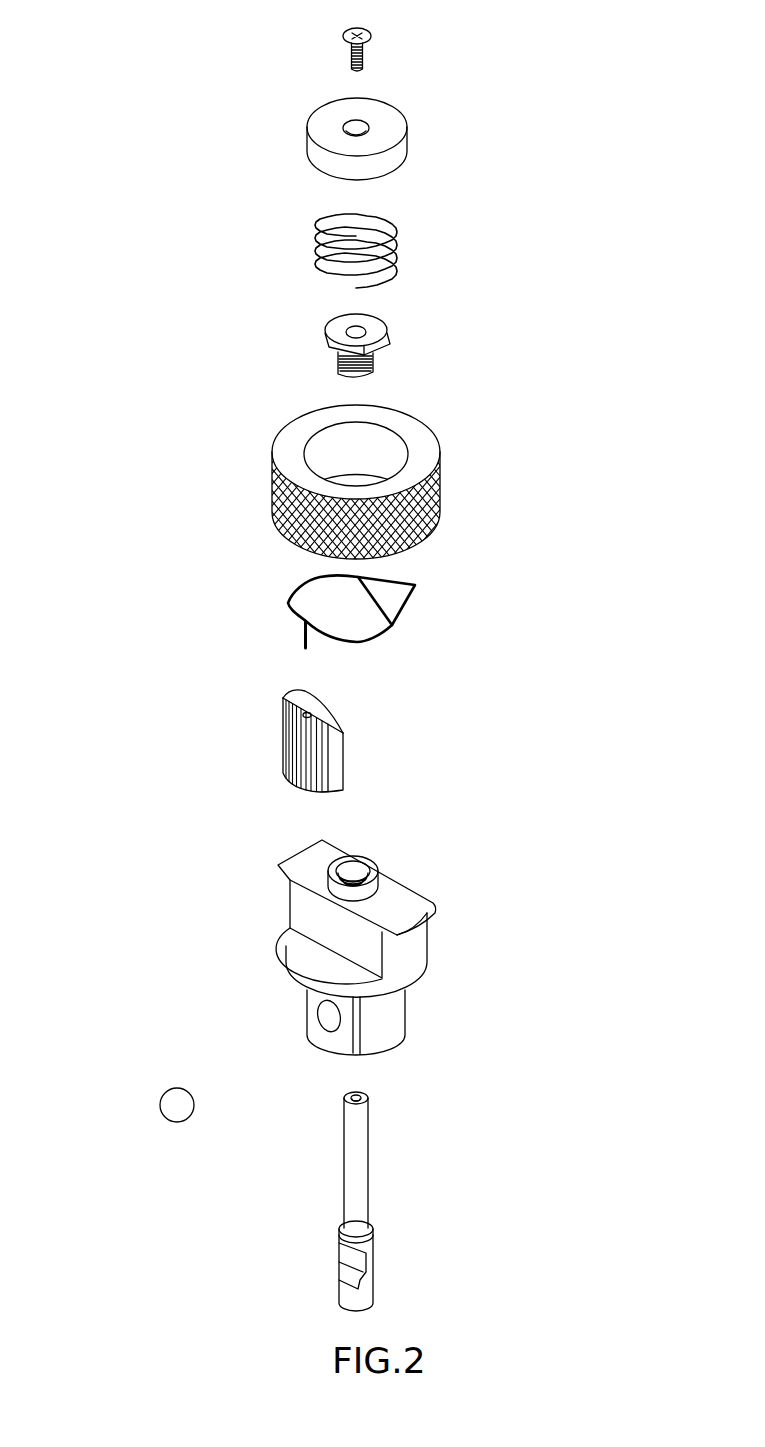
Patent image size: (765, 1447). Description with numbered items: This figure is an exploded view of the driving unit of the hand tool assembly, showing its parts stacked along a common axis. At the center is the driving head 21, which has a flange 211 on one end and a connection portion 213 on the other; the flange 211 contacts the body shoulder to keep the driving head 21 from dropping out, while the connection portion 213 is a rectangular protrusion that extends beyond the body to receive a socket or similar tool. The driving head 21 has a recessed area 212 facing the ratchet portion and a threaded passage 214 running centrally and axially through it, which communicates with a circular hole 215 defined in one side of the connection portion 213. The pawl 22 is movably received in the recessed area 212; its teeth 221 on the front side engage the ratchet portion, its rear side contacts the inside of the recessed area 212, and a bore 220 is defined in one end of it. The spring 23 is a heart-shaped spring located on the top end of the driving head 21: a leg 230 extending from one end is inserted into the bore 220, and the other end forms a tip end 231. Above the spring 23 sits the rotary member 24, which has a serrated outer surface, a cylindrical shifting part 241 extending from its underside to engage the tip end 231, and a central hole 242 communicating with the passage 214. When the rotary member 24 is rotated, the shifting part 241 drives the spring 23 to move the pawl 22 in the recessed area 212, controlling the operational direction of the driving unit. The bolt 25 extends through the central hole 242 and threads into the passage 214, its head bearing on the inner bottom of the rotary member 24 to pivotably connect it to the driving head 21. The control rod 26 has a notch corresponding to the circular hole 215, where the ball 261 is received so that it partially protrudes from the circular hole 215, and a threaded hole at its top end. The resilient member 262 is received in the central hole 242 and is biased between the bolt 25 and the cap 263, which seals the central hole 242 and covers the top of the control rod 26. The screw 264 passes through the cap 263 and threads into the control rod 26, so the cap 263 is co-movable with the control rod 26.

The driving head 21 is at (358, 948).
The flange 211 is at (436, 915).
The recessed area 212 is at (300, 947).
The connection portion 213 is at (394, 1024).
The passage 214 is at (367, 865).
The circular hole 215 is at (327, 1020).
The pawl 22 is at (302, 737).
The bore 220 is at (311, 717).
The teeth 221 is at (302, 707).
The spring 23 is at (360, 617).
The leg 230 is at (302, 635).
The tip end 231 is at (416, 587).
The rotary member 24 is at (355, 485).
The shifting part 241 is at (428, 530).
The central hole 242 is at (317, 447).
The bolt 25 is at (384, 335).
The control rod 26 is at (375, 1292).
The ball 261 is at (170, 1108).
The resilient member 262 is at (322, 243).
The cap 263 is at (397, 128).
The screw 264 is at (348, 31).